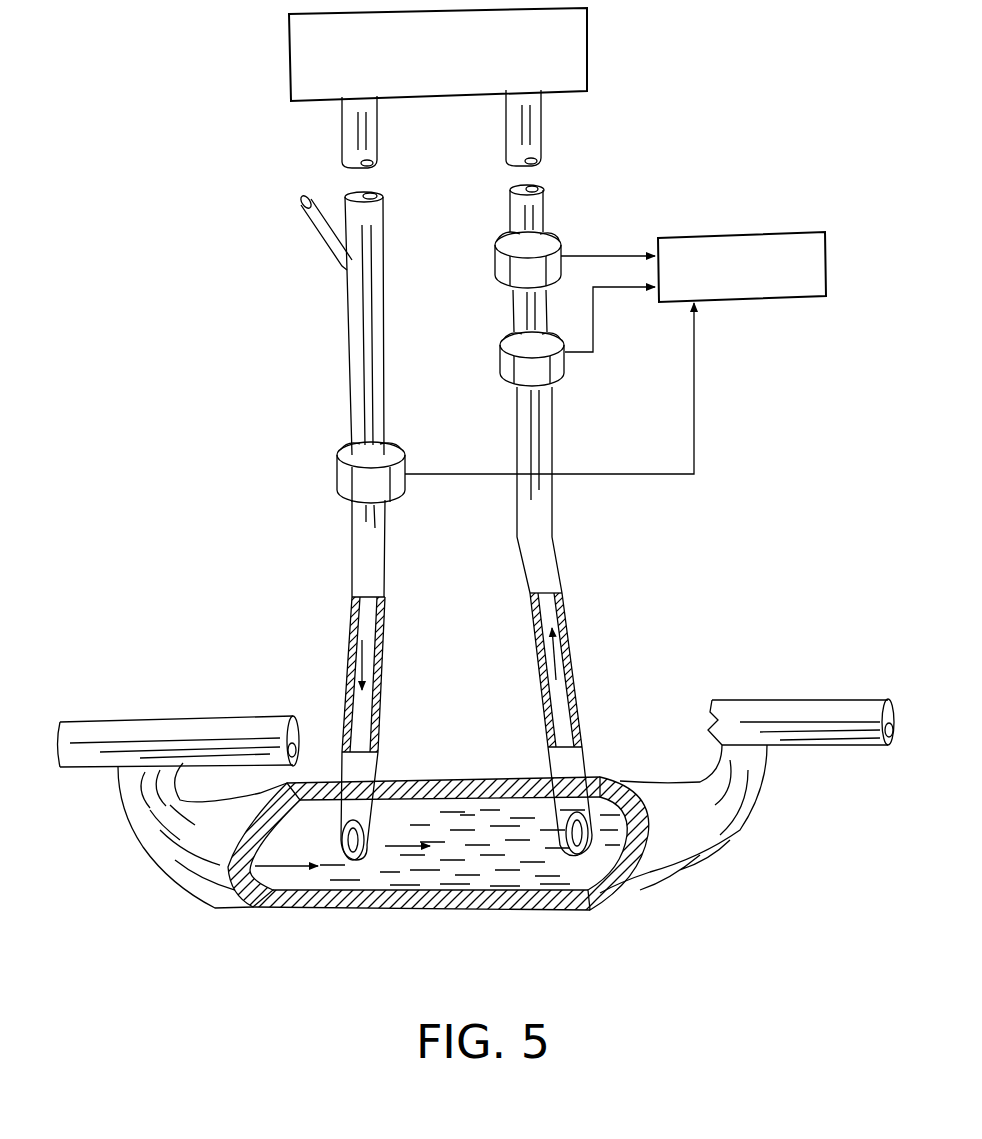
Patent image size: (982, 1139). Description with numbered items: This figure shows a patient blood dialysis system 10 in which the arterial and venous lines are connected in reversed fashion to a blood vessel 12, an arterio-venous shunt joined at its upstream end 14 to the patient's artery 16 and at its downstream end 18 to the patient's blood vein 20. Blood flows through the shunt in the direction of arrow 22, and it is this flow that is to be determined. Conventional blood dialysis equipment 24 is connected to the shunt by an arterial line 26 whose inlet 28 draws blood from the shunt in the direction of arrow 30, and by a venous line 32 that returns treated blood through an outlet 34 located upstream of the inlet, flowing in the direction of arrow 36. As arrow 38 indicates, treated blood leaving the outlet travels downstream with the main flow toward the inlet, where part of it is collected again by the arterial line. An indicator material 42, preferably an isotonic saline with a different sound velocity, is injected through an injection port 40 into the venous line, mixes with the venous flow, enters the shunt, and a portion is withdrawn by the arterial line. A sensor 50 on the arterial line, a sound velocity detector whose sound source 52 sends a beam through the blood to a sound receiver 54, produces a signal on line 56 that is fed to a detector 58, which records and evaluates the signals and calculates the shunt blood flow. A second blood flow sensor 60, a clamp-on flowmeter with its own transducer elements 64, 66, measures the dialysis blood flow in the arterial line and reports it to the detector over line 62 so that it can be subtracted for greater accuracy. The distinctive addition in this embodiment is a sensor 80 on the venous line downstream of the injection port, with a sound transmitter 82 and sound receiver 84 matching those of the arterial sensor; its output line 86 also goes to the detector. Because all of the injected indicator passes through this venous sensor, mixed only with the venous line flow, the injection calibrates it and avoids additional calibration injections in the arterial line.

The patient blood dialysis system 10 is at (671, 190).
The blood vessel 12 is at (208, 905).
The upstream end 14 is at (120, 807).
The artery 16 is at (175, 715).
The downstream end 18 is at (763, 802).
The blood vein 20 is at (777, 698).
The arrow 22 is at (303, 870).
The blood dialysis equipment 24 is at (590, 42).
The arterial line 26 is at (560, 497).
The inlet 28 is at (597, 860).
The arrow 30 is at (573, 667).
The venous line 32 is at (347, 365).
The outlet 34 is at (360, 860).
The arrow 36 is at (347, 652).
The arrow 38 is at (390, 858).
The injection port 40 is at (318, 237).
The indicator material 42 is at (253, 143).
The sensor 50 is at (492, 282).
The sound source 52 is at (503, 242).
The sound receiver 54 is at (555, 235).
The line 56 is at (580, 258).
The detector 58 is at (712, 302).
The second blood flow sensor 60 is at (492, 385).
The line 62 is at (582, 357).
The transducer 64 is at (507, 363).
The transducer 66 is at (563, 370).
The sensor 80 is at (338, 498).
The sound transmitter 82 is at (347, 458).
The sound receiver 84 is at (400, 455).
The output line 86 is at (652, 478).